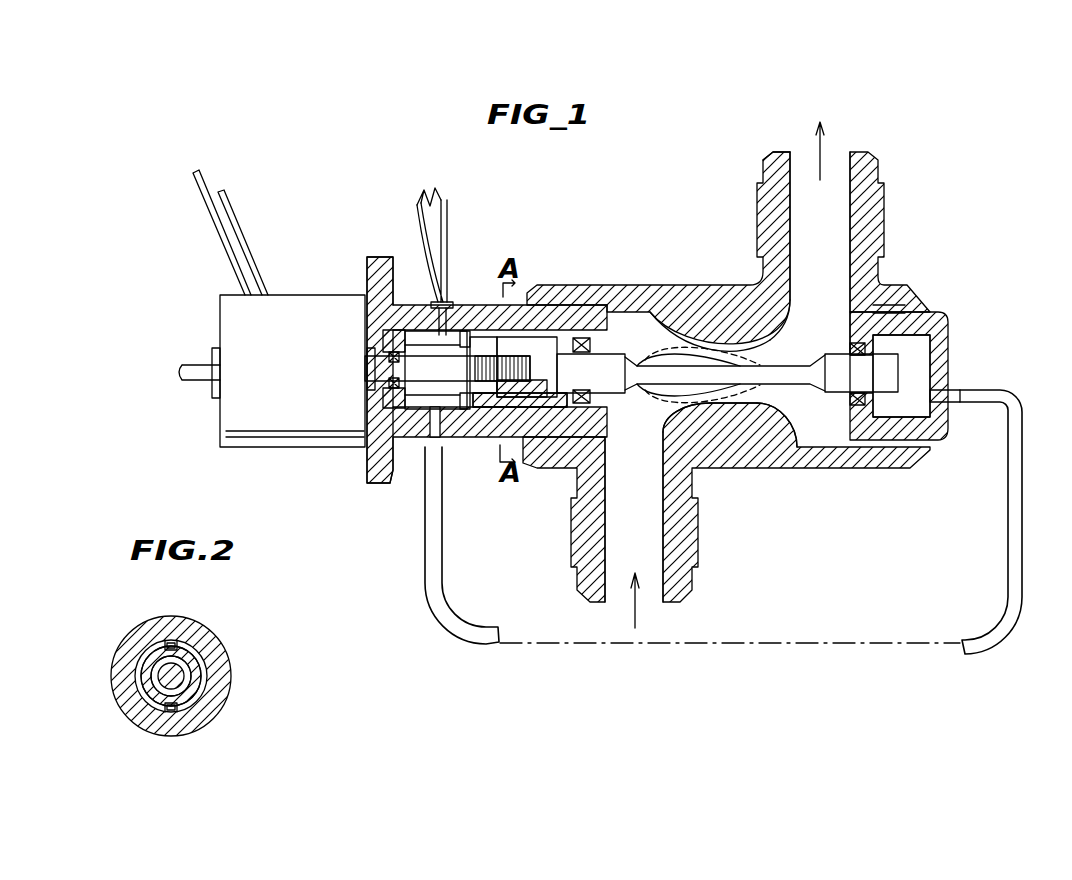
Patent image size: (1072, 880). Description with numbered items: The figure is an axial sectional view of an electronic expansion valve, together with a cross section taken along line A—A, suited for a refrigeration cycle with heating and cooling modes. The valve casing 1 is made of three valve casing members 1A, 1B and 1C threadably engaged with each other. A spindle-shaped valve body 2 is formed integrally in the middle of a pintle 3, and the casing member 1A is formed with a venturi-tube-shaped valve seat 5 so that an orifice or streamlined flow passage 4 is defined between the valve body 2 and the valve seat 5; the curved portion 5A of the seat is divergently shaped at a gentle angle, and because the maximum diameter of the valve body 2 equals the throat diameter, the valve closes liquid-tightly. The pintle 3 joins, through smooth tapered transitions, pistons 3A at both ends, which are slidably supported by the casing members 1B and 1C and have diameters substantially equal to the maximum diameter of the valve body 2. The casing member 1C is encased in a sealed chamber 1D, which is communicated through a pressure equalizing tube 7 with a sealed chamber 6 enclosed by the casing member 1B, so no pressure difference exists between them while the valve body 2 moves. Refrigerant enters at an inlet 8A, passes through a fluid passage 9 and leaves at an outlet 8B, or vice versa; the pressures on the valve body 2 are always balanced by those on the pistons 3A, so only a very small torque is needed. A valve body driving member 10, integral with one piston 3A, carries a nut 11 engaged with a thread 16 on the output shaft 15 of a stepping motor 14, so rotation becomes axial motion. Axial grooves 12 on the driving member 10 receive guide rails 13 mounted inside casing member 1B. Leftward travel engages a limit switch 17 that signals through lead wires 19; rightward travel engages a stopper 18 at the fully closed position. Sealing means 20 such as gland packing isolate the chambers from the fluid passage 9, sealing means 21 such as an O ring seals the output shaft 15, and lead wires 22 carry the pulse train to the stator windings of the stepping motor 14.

In FIG. 1, the valve casing 1 is at (603, 318).
In FIG. 1, the valve casing member 1A is at (773, 173).
In FIG. 1, the valve casing member 1B is at (400, 440).
In FIG. 2, the valve casing member 1B is at (213, 647).
In FIG. 1, the valve casing member 1C is at (933, 320).
In FIG. 1, the sealed chamber 1D is at (917, 357).
In FIG. 1, the spindle-shaped valve body 2 is at (697, 345).
In FIG. 1, the pintle 3 is at (762, 375).
In FIG. 1, the piston 3A is at (615, 352).
In FIG. 1, the orifice or streamlined flow passage 4 is at (720, 467).
In FIG. 1, the venturi-tube-shaped valve seat 5 is at (745, 405).
In FIG. 1, the curved portion 5A is at (710, 347).
In FIG. 1, the sealed chamber 6 is at (450, 450).
In FIG. 1, the pressure equalizing tube 7 is at (425, 575).
In FIG. 1, the inlet 8A is at (833, 160).
In FIG. 1, the outlet 8B is at (622, 587).
In FIG. 1, the fluid passage 9 is at (637, 473).
In FIG. 1, the valve body driving member 10 is at (513, 320).
In FIG. 2, the valve body driving member 10 is at (132, 664).
In FIG. 1, the nut 11 is at (490, 437).
In FIG. 2, the nut 11 is at (186, 680).
In FIG. 2, the axial grooves 12 is at (160, 640).
In FIG. 1, the guide rails 13 is at (490, 335).
In FIG. 2, the guide rails 13 is at (175, 642).
In FIG. 1, the stepping motor 14 is at (220, 414).
In FIG. 1, the output shaft 15 is at (427, 367).
In FIG. 2, the output shaft 15 is at (142, 688).
In FIG. 1, the thread 16 is at (480, 340).
In FIG. 1, the limit switch 17 is at (458, 303).
In FIG. 1, the stopper 18 is at (548, 345).
In FIG. 1, the lead wires 19 is at (432, 188).
In FIG. 1, the sealing means 20 is at (580, 345).
In FIG. 1, the sealing means 21 is at (375, 398).
In FIG. 1, the lead wires 22 is at (240, 250).